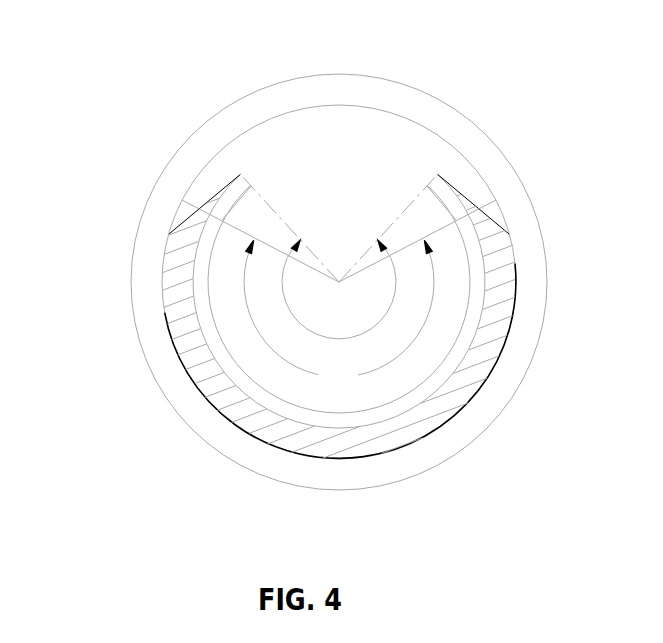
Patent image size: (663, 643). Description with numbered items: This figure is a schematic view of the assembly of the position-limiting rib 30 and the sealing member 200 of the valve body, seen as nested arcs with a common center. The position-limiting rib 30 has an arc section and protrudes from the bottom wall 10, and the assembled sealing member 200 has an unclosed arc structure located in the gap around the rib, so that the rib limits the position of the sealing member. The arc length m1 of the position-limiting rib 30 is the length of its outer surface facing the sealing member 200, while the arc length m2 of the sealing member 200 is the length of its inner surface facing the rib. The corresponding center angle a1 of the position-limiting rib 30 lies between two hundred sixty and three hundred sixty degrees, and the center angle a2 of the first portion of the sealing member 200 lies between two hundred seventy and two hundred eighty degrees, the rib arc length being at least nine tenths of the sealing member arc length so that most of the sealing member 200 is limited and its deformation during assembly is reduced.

The bottom wall 10 is at (327, 91).
The position-limiting rib 30 is at (283, 412).
The sealing member 200 is at (166, 317).
The arc length of the position-limiting rib m1 is at (225, 190).
The arc length of the sealing member m2 is at (190, 280).
The center angle corresponding to the arc length of the position-limiting rib a1 is at (339, 292).
The center angle corresponding to the arc length of the first portion of the sealing a2 is at (339, 316).